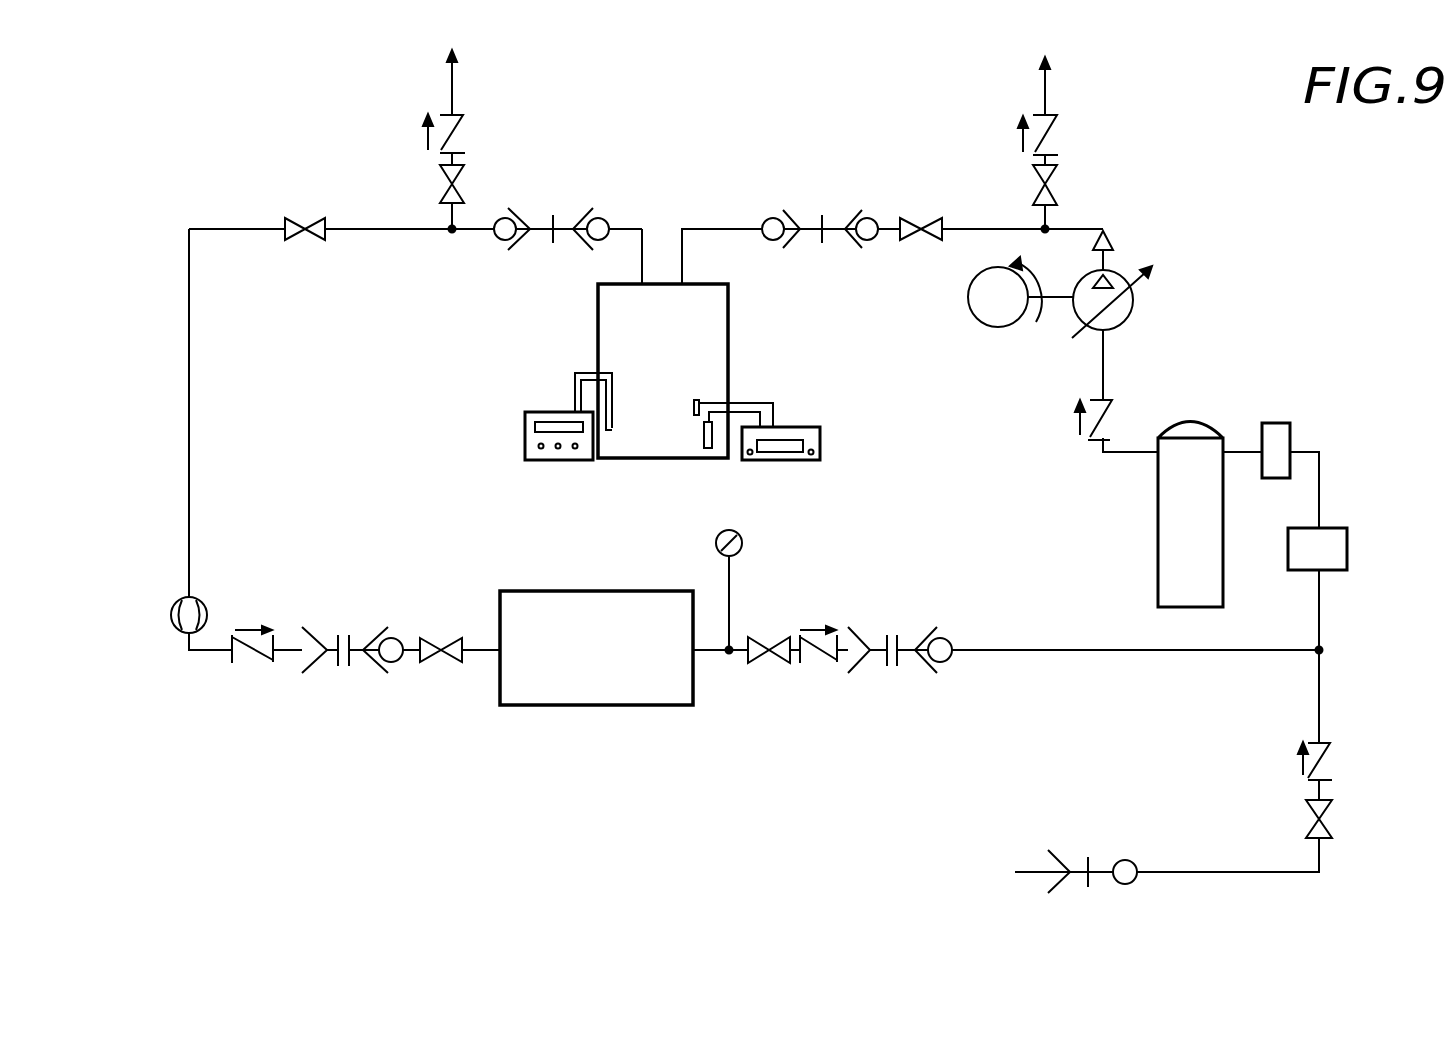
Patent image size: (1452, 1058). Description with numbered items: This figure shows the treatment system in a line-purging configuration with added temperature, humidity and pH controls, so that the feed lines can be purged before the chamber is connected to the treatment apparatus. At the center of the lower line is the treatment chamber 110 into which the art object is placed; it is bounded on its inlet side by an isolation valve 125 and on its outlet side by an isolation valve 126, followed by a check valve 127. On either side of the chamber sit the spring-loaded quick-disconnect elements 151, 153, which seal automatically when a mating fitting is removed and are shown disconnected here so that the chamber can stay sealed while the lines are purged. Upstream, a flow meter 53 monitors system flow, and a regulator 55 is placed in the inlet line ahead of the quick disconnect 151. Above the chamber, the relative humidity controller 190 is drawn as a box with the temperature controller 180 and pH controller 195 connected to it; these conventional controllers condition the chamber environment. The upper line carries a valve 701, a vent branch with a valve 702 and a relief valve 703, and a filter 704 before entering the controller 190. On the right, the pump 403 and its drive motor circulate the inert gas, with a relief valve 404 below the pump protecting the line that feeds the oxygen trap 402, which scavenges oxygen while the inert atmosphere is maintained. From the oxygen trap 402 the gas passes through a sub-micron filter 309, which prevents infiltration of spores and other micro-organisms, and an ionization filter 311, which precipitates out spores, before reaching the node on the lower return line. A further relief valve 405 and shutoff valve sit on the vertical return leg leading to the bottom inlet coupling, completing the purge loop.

The flow meter 53 is at (175, 630).
The pressure regulator 55 is at (237, 657).
The quick-disconnect element 151 is at (353, 614).
The isolation valve 125 is at (425, 640).
The treatment chamber 110 is at (588, 591).
The isolation valve 126 is at (750, 637).
The check valve 127 is at (845, 639).
The quick-disconnect element 153 is at (930, 635).
The relative humidity controller 190 is at (730, 352).
The temperature controller 180 is at (520, 432).
The pH controller 195 is at (820, 448).
The valve 701 is at (278, 219).
The vent valve 702 is at (438, 170).
The relief valve 703 is at (462, 115).
The filter 704 is at (552, 205).
The pump 403 is at (1120, 272).
The relief valve 404 is at (1108, 404).
The oxygen trap 402 is at (1194, 422).
The sub-micron filter 309 is at (1280, 423).
The ionization filter 311 is at (1347, 542).
The relief valve 405 is at (1320, 746).